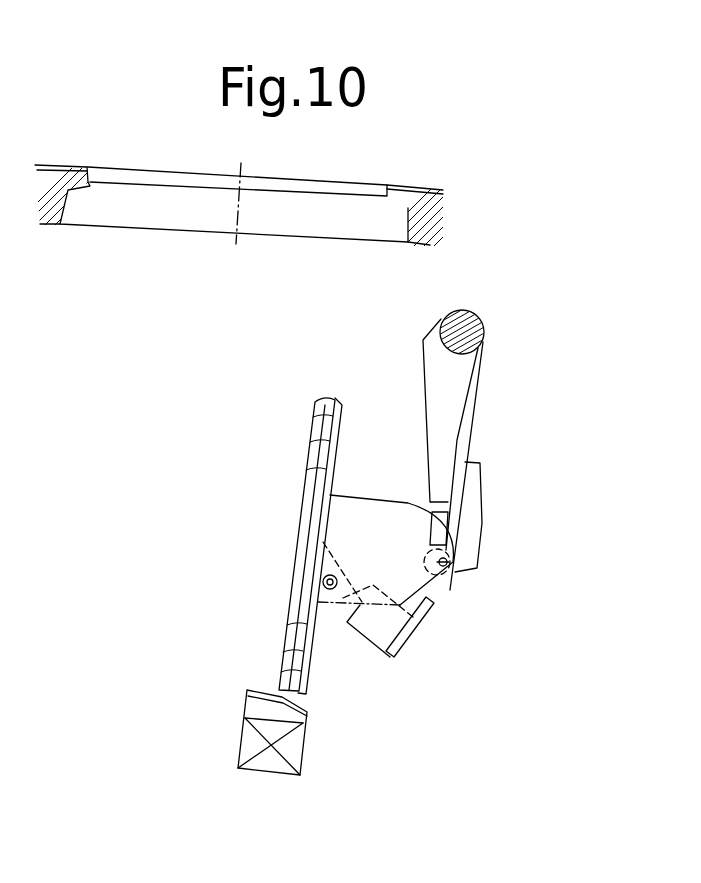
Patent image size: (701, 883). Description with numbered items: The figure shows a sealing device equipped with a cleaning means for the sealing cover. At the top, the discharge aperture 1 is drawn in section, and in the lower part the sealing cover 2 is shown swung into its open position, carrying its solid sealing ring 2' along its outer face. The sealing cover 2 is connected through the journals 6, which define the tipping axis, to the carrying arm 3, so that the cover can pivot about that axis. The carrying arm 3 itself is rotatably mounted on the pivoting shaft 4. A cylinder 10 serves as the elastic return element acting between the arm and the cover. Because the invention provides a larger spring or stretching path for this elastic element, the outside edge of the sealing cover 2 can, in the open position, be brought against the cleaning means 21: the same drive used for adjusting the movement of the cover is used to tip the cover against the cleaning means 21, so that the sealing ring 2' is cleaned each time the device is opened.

The discharge aperture 1 is at (125, 175).
The sealing cover 2 is at (304, 517).
The solid sealing ring 2' is at (322, 514).
The carrying arm 3 is at (478, 403).
The pivoting shaft 4 is at (475, 323).
The journals 6 is at (442, 562).
The cylinder 10 is at (378, 625).
The cleaning means 21 is at (250, 744).